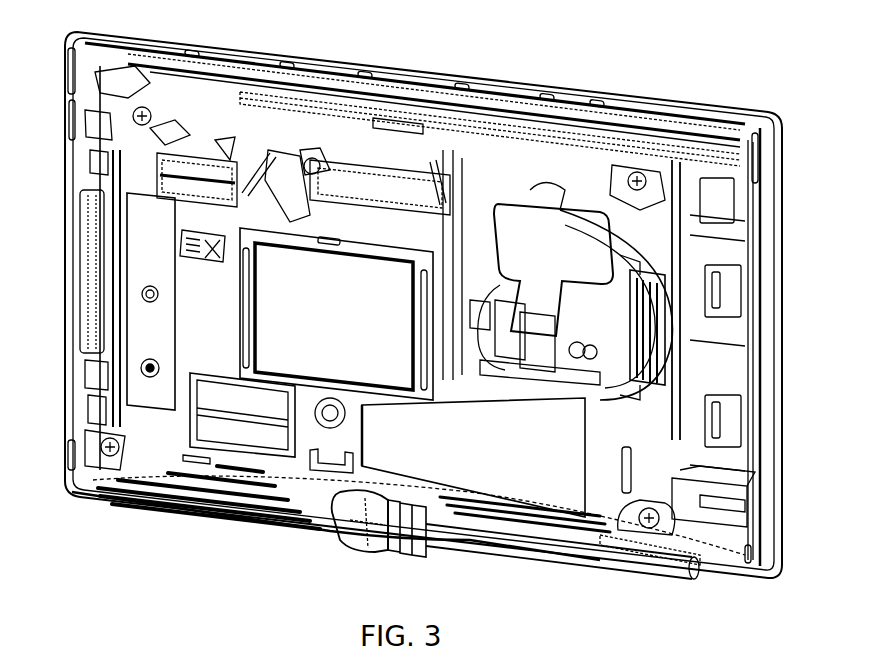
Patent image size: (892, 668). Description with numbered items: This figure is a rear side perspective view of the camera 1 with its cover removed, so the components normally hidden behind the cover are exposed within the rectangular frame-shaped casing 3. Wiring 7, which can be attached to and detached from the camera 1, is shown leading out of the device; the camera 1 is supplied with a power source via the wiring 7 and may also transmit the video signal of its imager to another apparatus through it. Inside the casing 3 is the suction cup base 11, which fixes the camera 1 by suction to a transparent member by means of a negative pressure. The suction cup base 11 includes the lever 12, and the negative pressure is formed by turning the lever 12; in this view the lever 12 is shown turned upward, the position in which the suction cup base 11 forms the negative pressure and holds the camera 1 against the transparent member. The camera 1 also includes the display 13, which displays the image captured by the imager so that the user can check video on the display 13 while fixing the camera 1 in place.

The camera 1 is at (423, 302).
The casing 3 is at (273, 52).
The wiring 7 is at (512, 548).
The suction cup base 11 is at (468, 262).
The lever 12 is at (548, 228).
The display 13 is at (302, 345).